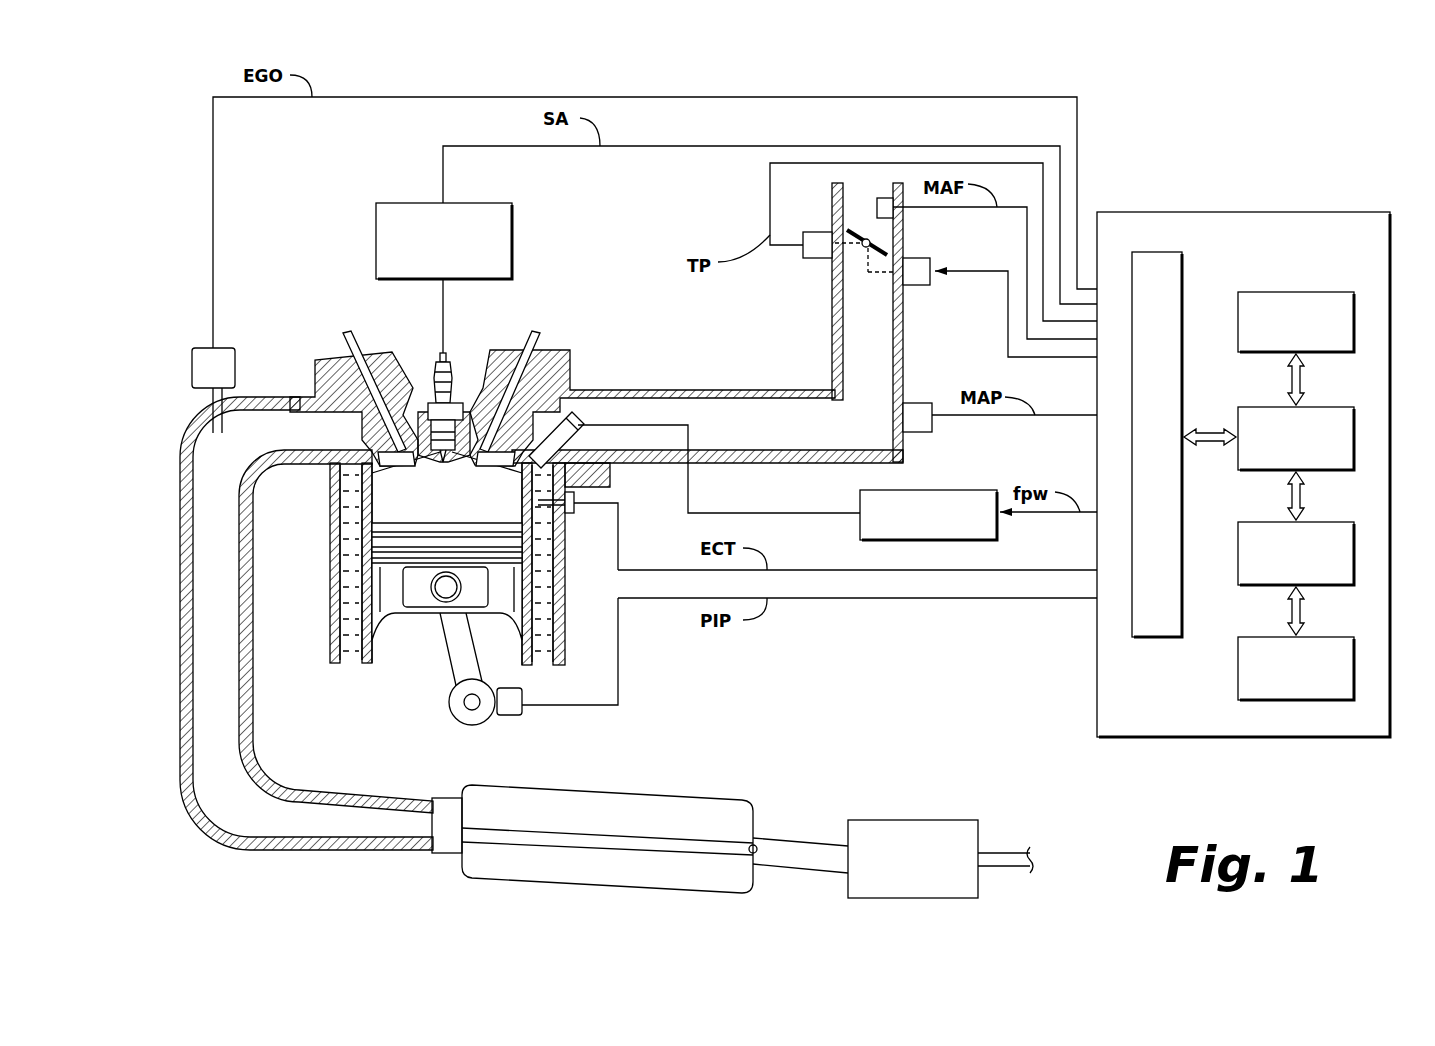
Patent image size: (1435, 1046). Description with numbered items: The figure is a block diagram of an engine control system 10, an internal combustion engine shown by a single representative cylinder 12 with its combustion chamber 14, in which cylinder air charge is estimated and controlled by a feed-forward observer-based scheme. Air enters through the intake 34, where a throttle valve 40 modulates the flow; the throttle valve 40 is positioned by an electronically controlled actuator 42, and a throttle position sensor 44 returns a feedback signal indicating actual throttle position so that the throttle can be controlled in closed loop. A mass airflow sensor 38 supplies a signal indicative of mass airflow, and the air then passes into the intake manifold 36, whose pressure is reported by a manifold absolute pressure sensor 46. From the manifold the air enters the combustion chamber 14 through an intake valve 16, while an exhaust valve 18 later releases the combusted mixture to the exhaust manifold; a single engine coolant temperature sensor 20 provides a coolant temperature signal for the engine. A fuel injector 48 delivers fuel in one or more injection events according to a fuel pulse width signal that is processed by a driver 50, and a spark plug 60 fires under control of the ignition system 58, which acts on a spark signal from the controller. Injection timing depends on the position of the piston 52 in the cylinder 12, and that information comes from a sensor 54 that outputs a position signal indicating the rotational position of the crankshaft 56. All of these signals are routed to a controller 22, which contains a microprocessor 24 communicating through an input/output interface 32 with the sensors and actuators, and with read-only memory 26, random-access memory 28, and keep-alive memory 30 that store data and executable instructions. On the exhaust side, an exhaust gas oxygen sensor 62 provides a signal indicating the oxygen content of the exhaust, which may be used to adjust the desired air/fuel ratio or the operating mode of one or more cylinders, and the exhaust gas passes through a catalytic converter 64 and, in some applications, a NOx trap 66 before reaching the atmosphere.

The system 10 is at (332, 285).
The cylinder 12 is at (383, 655).
The combustion chamber 14 is at (385, 487).
The intake valve 16 is at (530, 340).
The exhaust valve 18 is at (340, 345).
The engine coolant temperature sensor 20 is at (575, 500).
The controller 22 is at (1243, 448).
The microprocessor 24 is at (1238, 425).
The read-only memory (ROM) 26 is at (1238, 318).
The random-access memory (RAM) 28 is at (1238, 545).
The keep-alive memory (KAM) 30 is at (1238, 663).
The input/output (I/O) interface 32 is at (1157, 252).
The intake 34 is at (863, 312).
The intake manifold 36 is at (732, 413).
The mass airflow sensor 38 is at (884, 198).
The throttle valve 40 is at (867, 250).
The actuator 42 is at (920, 285).
The throttle position sensor 44 is at (803, 230).
The manifold absolute pressure sensor 46 is at (920, 403).
The fuel injector 48 is at (582, 412).
The driver 50 is at (930, 490).
The piston 52 is at (398, 605).
The sensor 54 is at (515, 715).
The crankshaft 56 is at (455, 718).
The ignition system 58 is at (392, 202).
The spark plug 60 is at (435, 372).
The exhaust gas oxygen sensor 62 is at (192, 372).
The catalytic converter 64 is at (675, 785).
The NOx trap 66 is at (935, 820).